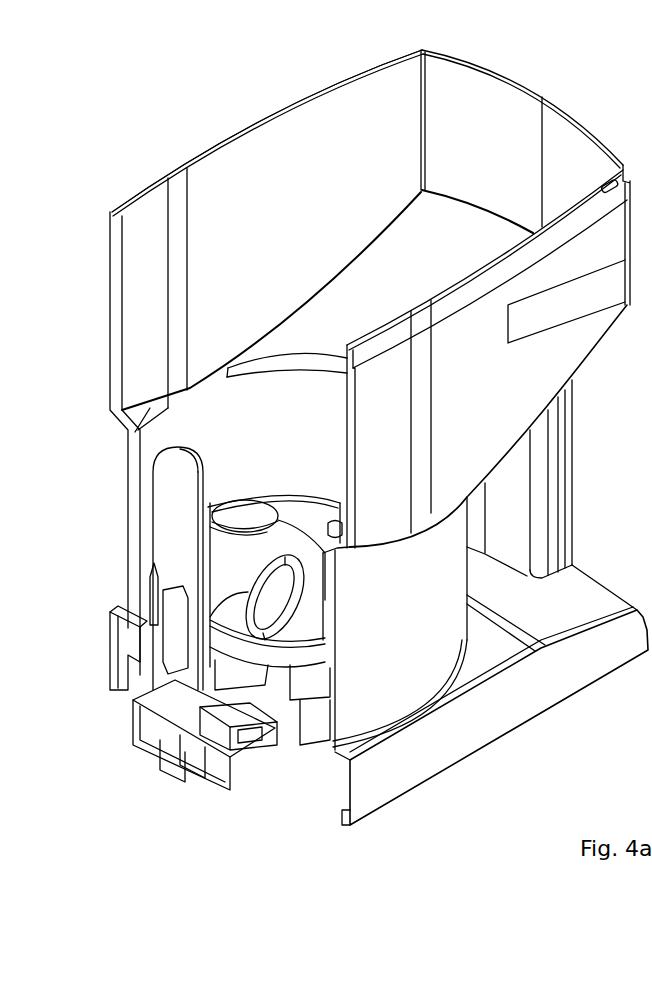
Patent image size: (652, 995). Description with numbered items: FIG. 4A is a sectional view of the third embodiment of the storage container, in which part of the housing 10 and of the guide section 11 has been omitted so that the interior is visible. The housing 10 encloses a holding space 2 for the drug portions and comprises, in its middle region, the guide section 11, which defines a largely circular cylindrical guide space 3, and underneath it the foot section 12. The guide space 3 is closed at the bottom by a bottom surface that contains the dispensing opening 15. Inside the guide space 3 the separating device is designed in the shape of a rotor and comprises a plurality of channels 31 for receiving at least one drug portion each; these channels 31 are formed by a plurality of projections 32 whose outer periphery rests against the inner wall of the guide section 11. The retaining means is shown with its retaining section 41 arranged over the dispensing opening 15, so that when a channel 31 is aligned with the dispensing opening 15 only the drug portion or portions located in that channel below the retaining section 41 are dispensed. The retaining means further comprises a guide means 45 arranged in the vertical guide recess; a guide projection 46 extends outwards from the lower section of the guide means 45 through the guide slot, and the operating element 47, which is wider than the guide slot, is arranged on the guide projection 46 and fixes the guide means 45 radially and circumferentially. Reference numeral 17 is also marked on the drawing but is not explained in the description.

The holding space 2 is at (433, 268).
The guide space 3 is at (265, 432).
The housing 10 is at (307, 195).
The guide section 11 is at (412, 627).
The foot section 12 is at (512, 705).
The dispensing opening 15 is at (160, 728).
The slide 17 is at (160, 742).
The channel 31 is at (260, 703).
The projection 32 is at (307, 707).
The retaining section 41 is at (230, 667).
The guide means 45 is at (177, 496).
The guide projection 46 is at (175, 582).
The operating element 47 is at (160, 635).